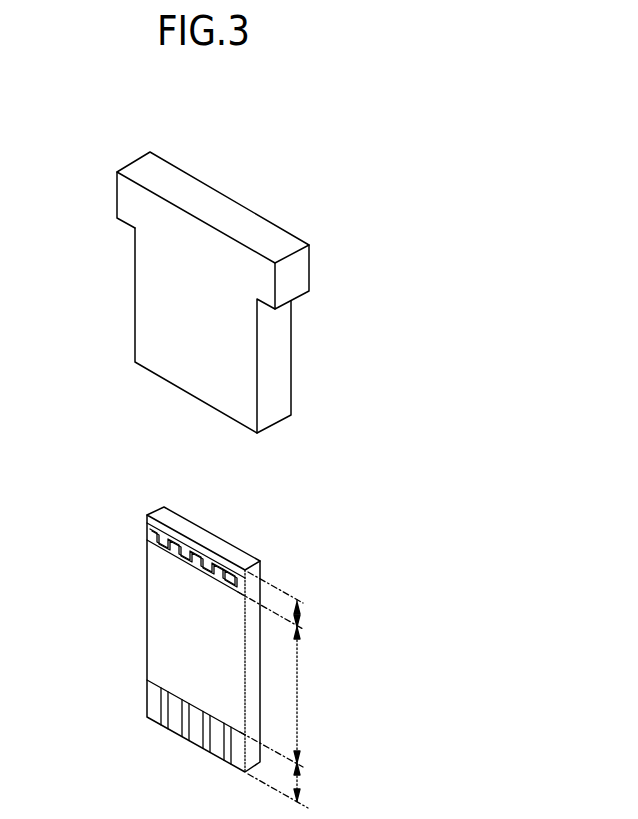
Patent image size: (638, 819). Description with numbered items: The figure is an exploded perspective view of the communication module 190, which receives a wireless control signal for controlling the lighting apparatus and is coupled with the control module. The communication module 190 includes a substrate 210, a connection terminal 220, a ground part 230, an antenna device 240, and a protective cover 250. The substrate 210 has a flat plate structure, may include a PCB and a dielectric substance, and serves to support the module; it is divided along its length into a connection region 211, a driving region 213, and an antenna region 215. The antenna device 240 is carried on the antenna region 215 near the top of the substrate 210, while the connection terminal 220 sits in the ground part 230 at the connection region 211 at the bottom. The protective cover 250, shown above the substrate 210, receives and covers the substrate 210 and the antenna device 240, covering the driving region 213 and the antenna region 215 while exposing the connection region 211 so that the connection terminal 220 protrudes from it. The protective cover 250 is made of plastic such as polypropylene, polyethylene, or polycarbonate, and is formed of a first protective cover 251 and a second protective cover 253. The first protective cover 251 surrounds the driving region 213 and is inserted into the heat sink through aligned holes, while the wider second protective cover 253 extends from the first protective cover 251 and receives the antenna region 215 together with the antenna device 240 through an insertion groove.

The communication module 190 is at (343, 84).
The protective cover 250 is at (130, 157).
The second protective cover 253 is at (123, 200).
The first protective cover 251 is at (282, 372).
The substrate 210 is at (163, 508).
The antenna device 240 is at (160, 536).
The ground part 230 is at (153, 702).
The connection terminal 220 is at (187, 740).
The antenna region 215 is at (302, 620).
The driving region 213 is at (314, 695).
The connection region 211 is at (298, 780).